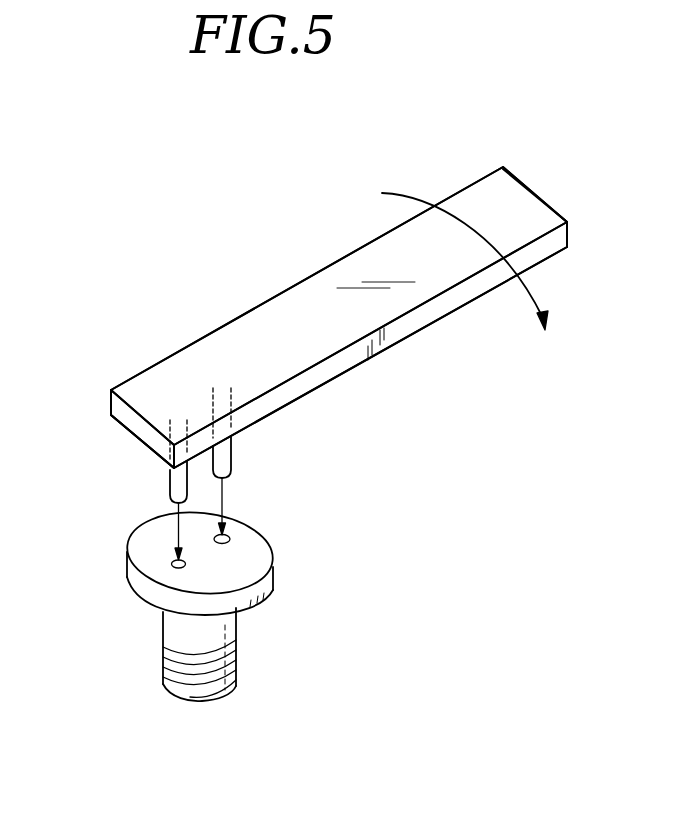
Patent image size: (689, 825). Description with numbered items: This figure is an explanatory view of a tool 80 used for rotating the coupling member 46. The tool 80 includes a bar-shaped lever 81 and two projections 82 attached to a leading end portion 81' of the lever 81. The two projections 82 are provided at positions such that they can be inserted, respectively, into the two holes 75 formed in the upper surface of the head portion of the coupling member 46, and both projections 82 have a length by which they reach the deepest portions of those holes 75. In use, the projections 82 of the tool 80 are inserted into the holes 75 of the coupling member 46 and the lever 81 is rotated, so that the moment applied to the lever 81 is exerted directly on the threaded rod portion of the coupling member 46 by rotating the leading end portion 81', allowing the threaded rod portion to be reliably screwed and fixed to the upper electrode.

The tool 80 is at (346, 218).
The lever 81 is at (339, 317).
The leading end portion 81' is at (142, 390).
The projections 82 is at (172, 483).
The holes 75 is at (172, 569).
The coupling member 46 is at (135, 657).